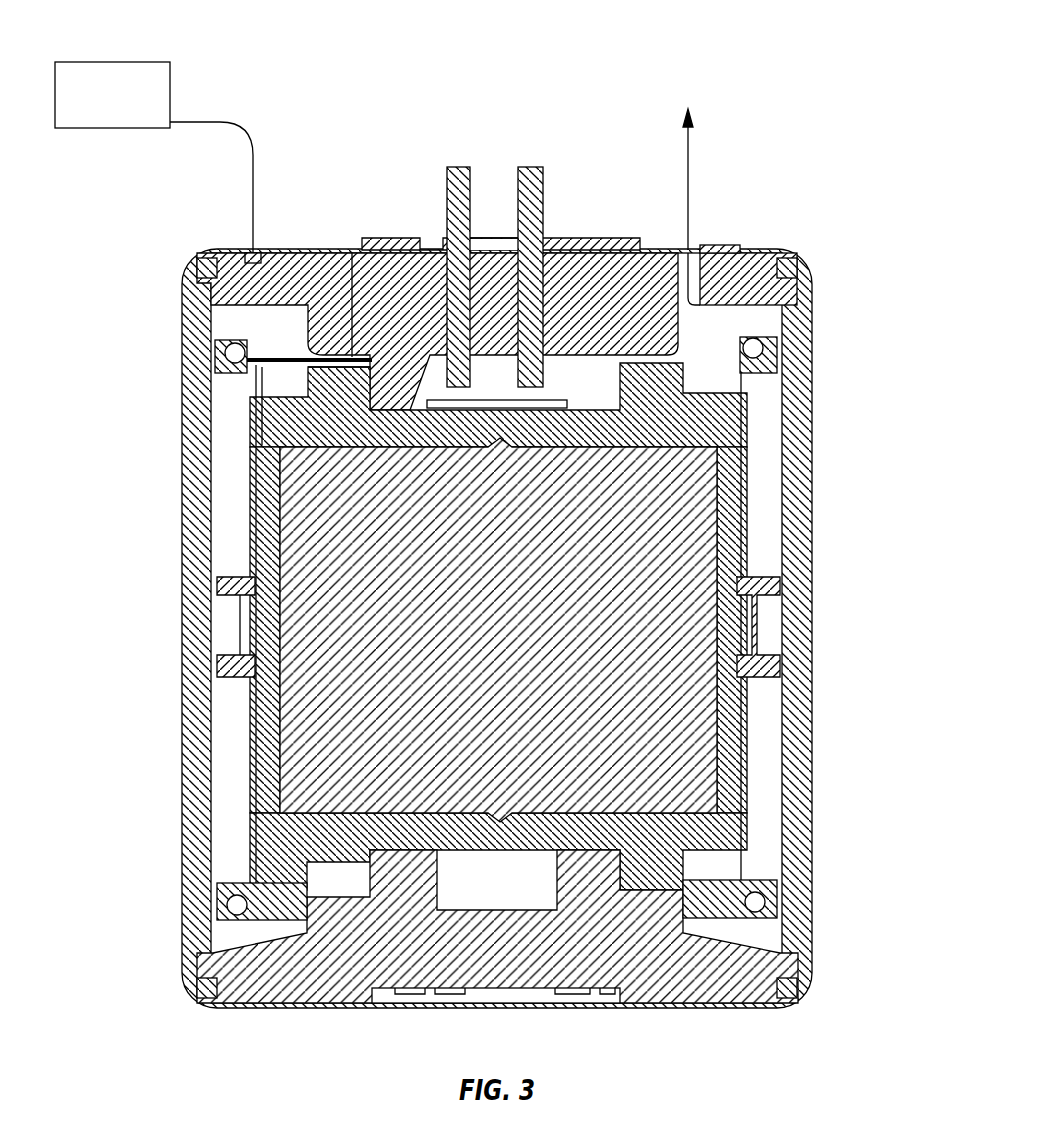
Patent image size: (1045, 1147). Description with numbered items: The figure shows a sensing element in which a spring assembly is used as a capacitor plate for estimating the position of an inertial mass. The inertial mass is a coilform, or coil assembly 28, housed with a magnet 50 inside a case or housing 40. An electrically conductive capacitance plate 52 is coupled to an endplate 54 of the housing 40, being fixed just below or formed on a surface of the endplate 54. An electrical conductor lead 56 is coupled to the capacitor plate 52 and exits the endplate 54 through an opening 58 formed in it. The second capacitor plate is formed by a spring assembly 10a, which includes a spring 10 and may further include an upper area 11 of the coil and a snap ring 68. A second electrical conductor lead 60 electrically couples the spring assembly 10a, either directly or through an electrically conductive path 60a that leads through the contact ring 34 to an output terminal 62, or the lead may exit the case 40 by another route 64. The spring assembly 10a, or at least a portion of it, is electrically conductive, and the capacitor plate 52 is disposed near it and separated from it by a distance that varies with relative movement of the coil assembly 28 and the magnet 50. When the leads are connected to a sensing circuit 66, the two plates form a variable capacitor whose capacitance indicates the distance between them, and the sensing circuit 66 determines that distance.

The spring 10 is at (268, 368).
The spring assembly 10a is at (252, 377).
The upper area of the coil 11 is at (213, 368).
The coil assembly 28 is at (752, 630).
The contact ring 34 is at (340, 372).
The housing 40 is at (192, 754).
The magnet 50 is at (700, 765).
The capacitance plate 52 is at (232, 313).
The endplate 54 is at (788, 252).
The electrical conductor lead 56 is at (690, 187).
The opening 58 is at (701, 245).
The second electrical conductor lead 60 is at (251, 190).
The electrically conductive path 60a is at (352, 355).
The output terminal 62 is at (517, 182).
The route 64 is at (256, 256).
The sensing circuit 66 is at (100, 109).
The snap ring 68 is at (770, 352).